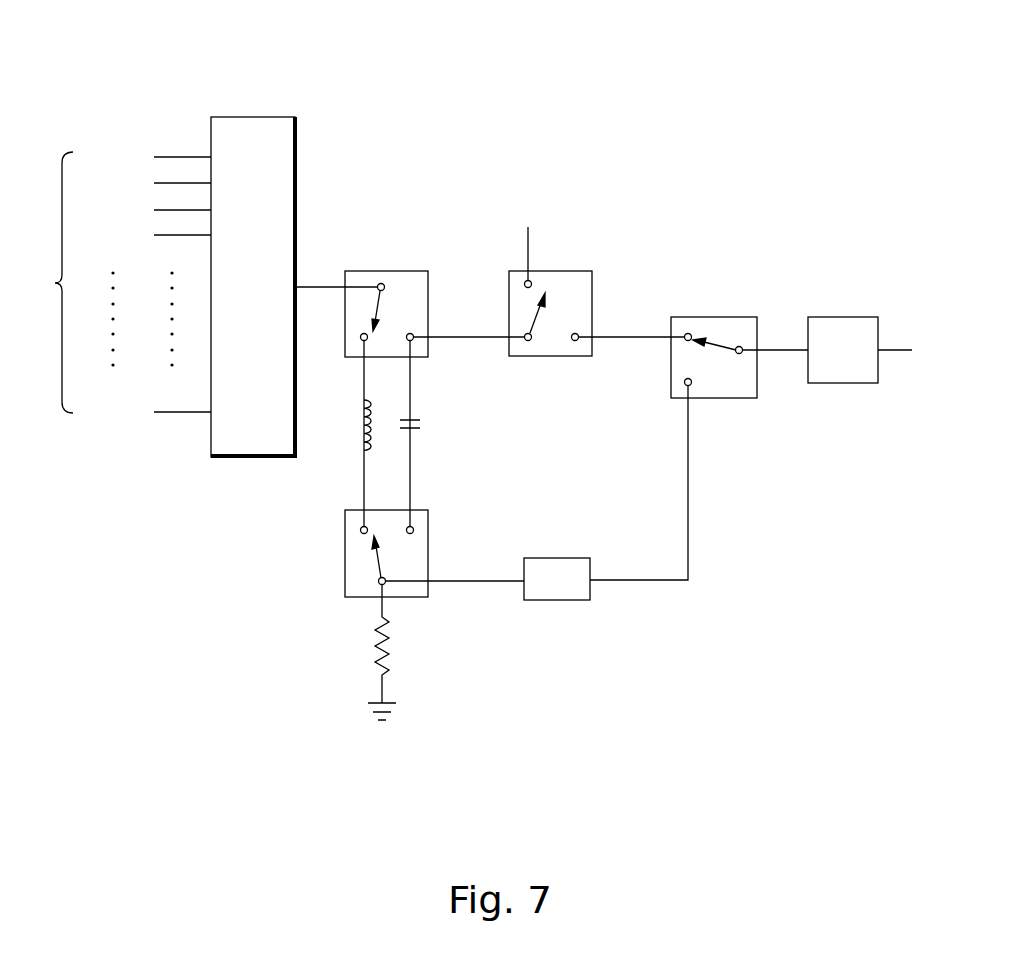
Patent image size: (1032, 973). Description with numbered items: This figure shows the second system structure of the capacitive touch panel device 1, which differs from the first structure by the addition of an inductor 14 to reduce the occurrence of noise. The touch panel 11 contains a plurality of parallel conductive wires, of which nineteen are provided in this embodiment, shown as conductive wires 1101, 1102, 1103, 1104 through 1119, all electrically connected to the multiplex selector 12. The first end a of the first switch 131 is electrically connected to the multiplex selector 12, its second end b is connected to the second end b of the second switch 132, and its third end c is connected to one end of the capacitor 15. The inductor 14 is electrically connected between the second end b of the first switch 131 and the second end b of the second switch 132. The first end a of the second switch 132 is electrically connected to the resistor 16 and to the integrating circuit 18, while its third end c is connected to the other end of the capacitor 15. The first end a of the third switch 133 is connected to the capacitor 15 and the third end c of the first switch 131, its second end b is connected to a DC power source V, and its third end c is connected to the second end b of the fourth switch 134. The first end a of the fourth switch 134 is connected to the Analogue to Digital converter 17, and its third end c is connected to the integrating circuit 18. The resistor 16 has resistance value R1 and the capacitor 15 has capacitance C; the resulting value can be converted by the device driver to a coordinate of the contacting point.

The capacitive touch panel device 1 is at (580, 135).
The touch panel 11 is at (99, 282).
The conductive wire 1101 is at (146, 156).
The conductive wire 1102 is at (146, 182).
The conductive wire 1103 is at (146, 209).
The conductive wire 1104 is at (146, 234).
The conductive wire 1119 is at (146, 409).
The multiplex selector 12 is at (255, 117).
The first switch 131 is at (387, 271).
The second switch 132 is at (345, 561).
The third switch 133 is at (583, 271).
The fourth switch 134 is at (713, 317).
The inductor 14 is at (358, 425).
The capacitor 15 is at (422, 428).
The resistor 16 is at (375, 650).
The Analogue to Digital converter 17 is at (843, 317).
The integrating circuit 18 is at (558, 558).